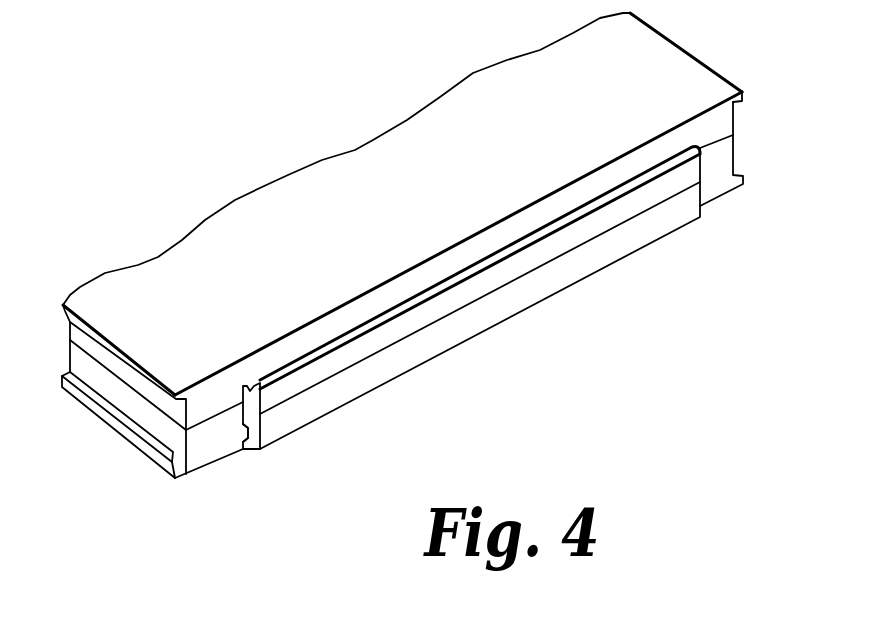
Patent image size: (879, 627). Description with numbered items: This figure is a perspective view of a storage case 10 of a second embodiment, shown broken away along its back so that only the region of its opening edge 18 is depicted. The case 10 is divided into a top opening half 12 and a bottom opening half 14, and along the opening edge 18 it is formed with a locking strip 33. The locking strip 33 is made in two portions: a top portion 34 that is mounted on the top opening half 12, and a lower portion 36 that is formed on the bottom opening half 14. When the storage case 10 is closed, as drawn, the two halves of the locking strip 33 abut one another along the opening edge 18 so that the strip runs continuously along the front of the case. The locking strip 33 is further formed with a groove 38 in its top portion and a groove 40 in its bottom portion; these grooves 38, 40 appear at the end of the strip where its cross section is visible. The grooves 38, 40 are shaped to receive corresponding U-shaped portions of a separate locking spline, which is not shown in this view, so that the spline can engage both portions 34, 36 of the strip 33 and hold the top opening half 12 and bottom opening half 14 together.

The storage case 10 is at (361, 193).
The top opening half 12 is at (687, 132).
The bottom opening half 14 is at (718, 166).
The opening edge 18 is at (192, 441).
The locking strip 33 is at (345, 353).
The top portion 34 is at (443, 308).
The lower portion 36 is at (567, 280).
The groove 38 is at (250, 384).
The groove 40 is at (246, 437).